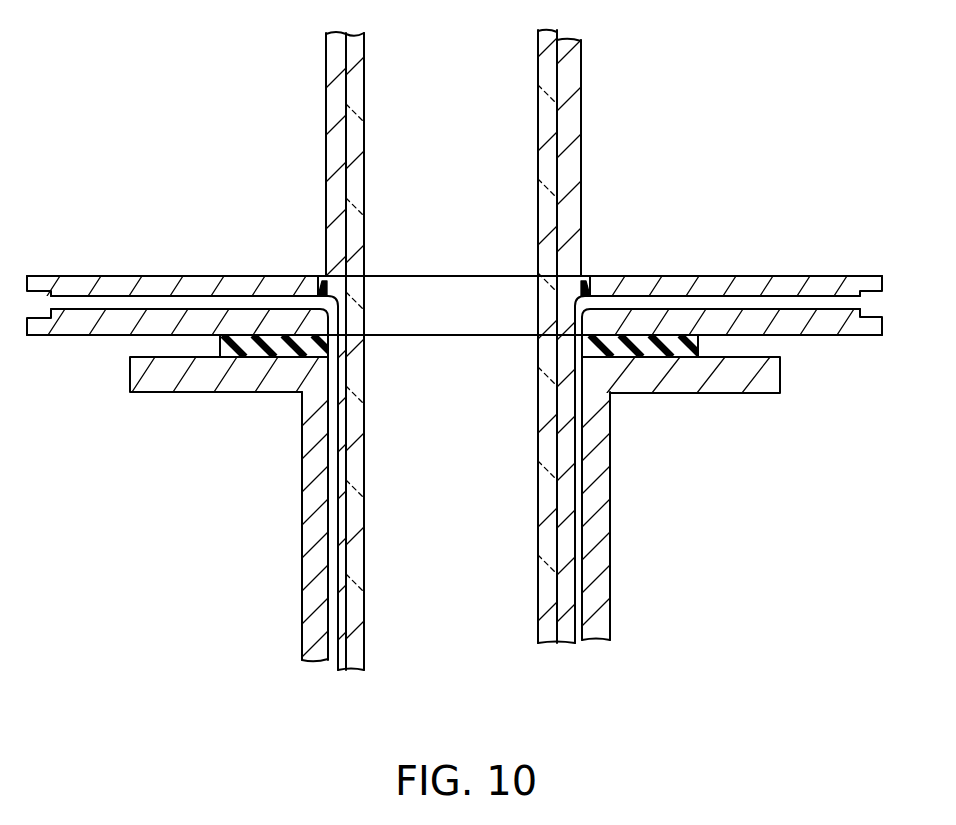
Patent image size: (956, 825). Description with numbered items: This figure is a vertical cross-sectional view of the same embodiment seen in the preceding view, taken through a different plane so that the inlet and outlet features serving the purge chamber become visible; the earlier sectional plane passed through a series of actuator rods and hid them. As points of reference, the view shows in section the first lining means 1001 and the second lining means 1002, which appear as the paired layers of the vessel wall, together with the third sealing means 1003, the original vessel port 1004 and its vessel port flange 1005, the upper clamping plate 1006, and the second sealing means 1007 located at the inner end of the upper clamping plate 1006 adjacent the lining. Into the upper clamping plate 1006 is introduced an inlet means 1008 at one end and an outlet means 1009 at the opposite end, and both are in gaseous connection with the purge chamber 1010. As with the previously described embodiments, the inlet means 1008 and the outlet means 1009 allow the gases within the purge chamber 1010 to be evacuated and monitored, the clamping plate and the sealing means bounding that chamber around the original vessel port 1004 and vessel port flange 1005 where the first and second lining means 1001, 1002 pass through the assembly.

The first lining means 1001 is at (357, 134).
The second lining means 1002 is at (333, 122).
The third sealing means 1003 is at (700, 341).
The original vessel port 1004 is at (304, 519).
The vessel port flange 1005 is at (210, 382).
The upper clamping plate 1006 is at (192, 288).
The second sealing means 1007 is at (588, 285).
The inlet means 1008 is at (36, 303).
The outlet means 1009 is at (870, 303).
The purge chamber 1010 is at (332, 666).